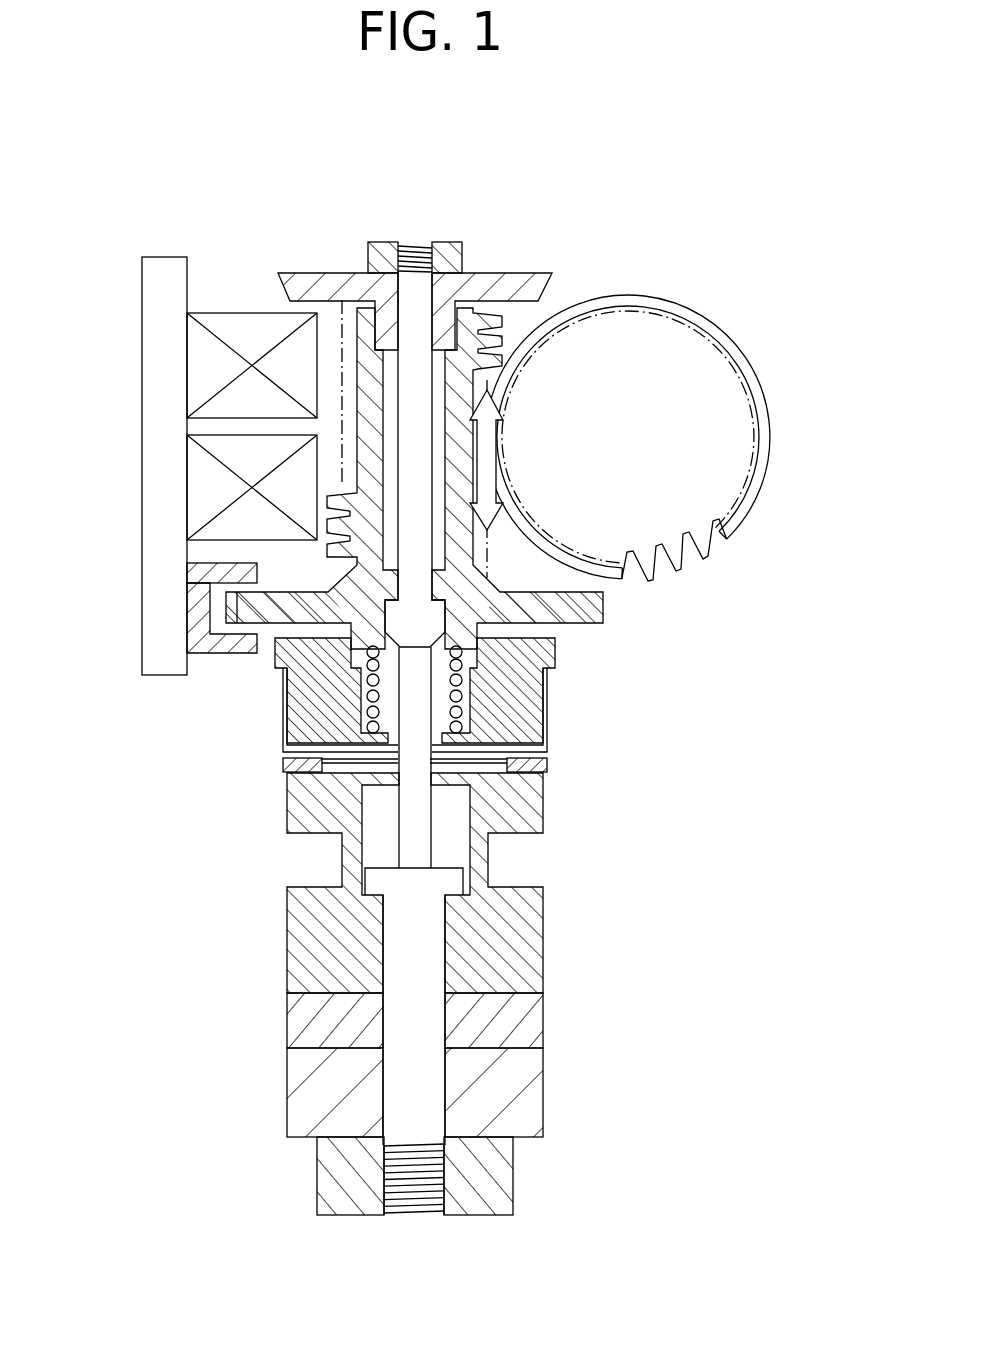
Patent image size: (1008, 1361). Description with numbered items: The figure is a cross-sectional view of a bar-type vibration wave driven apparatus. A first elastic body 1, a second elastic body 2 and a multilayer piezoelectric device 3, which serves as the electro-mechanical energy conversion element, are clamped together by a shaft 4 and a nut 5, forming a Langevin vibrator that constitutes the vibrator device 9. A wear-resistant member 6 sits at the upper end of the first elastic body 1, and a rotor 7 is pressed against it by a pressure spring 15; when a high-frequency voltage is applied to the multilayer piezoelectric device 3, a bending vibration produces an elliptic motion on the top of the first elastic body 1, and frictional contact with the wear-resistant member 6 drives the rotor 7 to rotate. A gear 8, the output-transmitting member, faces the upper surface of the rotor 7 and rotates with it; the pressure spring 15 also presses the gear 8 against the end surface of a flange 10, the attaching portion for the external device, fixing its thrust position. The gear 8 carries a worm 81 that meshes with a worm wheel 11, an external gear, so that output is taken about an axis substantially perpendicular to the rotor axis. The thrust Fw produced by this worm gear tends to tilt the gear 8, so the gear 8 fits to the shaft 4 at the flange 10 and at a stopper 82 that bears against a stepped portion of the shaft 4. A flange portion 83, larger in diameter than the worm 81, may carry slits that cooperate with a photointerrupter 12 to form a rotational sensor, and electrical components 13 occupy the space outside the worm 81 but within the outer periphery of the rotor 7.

The first elastic body 1 is at (515, 938).
The second elastic body 2 is at (520, 1103).
The multilayer piezoelectric device 3 is at (515, 1032).
The shaft 4 is at (403, 960).
The nut 5 is at (490, 1185).
The wear-resistant member 6 is at (537, 763).
The rotor 7 is at (515, 682).
The gear 8 is at (362, 370).
The vibrator device 9 is at (688, 1215).
The flange 10 is at (347, 290).
The worm wheel 11 is at (727, 453).
The photointerrupter 12 is at (210, 575).
The electrical components 13 is at (210, 382).
The pressure spring 15 is at (370, 701).
The worm 81 is at (460, 312).
The stopper 82 is at (445, 585).
The flange portion 83 is at (232, 604).
The thrust Fw is at (483, 453).